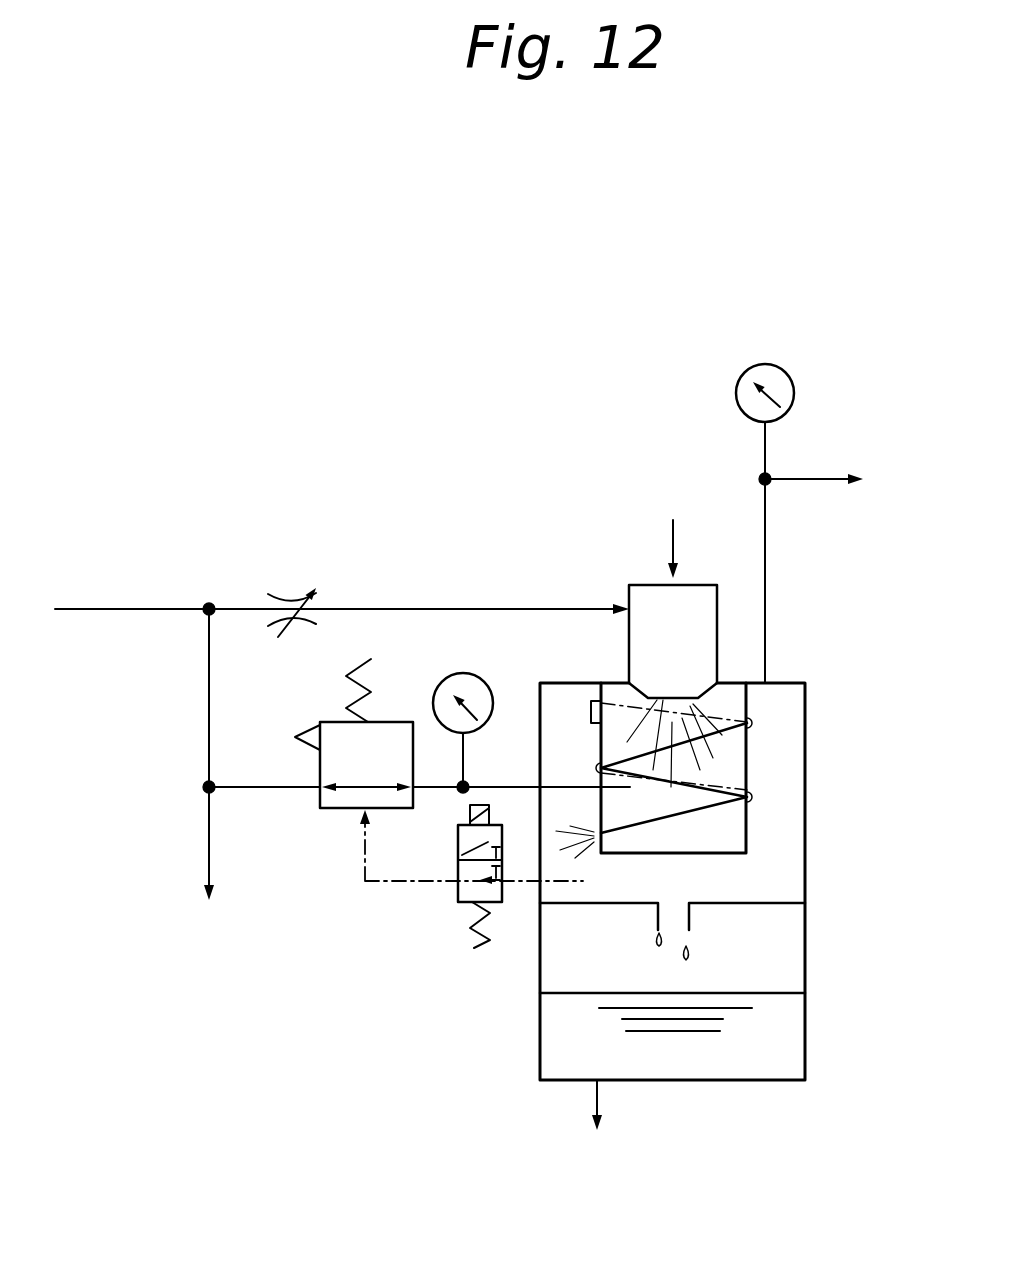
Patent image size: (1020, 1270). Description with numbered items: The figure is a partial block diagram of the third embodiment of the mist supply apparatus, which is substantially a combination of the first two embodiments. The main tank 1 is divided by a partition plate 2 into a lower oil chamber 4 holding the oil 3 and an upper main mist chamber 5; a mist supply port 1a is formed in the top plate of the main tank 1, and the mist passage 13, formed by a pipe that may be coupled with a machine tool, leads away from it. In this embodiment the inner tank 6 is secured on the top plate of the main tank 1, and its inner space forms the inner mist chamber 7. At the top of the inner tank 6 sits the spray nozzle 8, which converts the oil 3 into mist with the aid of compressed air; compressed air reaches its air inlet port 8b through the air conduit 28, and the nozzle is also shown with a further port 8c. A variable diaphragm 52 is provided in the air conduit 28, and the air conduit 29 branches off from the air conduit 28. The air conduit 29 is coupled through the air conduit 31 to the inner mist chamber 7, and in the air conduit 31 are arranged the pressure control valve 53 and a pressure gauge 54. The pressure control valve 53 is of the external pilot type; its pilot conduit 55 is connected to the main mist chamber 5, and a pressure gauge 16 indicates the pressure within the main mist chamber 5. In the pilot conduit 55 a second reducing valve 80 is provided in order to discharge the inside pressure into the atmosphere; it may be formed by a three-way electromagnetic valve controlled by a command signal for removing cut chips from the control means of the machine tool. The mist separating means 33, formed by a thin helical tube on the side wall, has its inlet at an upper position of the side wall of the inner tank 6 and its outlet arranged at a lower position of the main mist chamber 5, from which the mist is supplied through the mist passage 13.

The main tank 1 is at (806, 732).
The mist supply port 1a is at (688, 707).
The partition plate 2 is at (762, 903).
The oil 3 is at (786, 1026).
The oil chamber 4 is at (775, 965).
The main mist chamber 5 is at (782, 703).
The inner tank 6 is at (747, 823).
The inner mist chamber 7 is at (728, 771).
The spray nozzle 8 is at (676, 585).
The air inlet port 8b is at (628, 607).
The pressure pipe 8c is at (752, 683).
The mist passage 13 is at (828, 479).
The pressure gauge 16 is at (770, 378).
The air conduit 28 is at (127, 609).
The air conduit 29 is at (209, 687).
The air conduit 31 is at (285, 787).
The mist separating means 33 is at (677, 818).
The variable diaphragm 52 is at (292, 600).
The pressure control valve 53 is at (335, 808).
The pressure gauge 54 is at (470, 690).
The pilot conduit 55 is at (392, 881).
The second reducing valve 80 is at (467, 902).